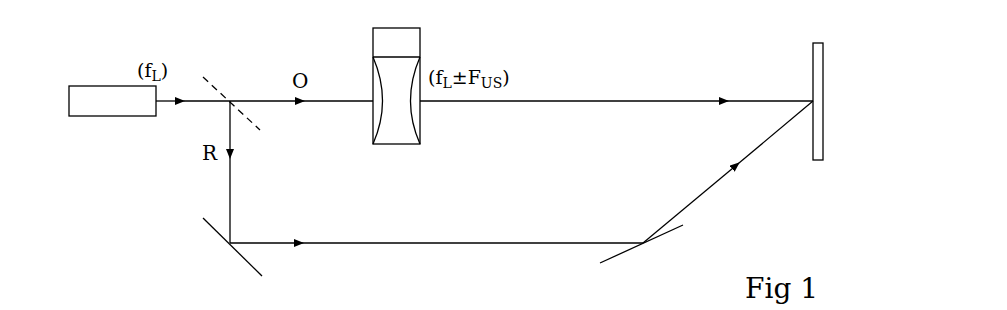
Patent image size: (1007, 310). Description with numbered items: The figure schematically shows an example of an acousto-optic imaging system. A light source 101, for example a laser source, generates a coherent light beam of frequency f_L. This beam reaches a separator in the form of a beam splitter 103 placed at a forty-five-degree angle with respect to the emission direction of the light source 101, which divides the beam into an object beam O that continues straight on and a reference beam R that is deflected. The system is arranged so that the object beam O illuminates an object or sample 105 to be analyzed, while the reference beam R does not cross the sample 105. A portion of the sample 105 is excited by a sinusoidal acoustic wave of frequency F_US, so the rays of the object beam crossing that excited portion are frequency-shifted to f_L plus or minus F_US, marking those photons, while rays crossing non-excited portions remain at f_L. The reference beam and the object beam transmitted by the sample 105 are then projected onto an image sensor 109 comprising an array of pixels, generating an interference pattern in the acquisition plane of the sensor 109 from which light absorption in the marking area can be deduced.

The light source 101 is at (102, 85).
The beam splitter 103 is at (203, 73).
The object or sample 105 is at (395, 144).
The image sensor 109 is at (818, 43).